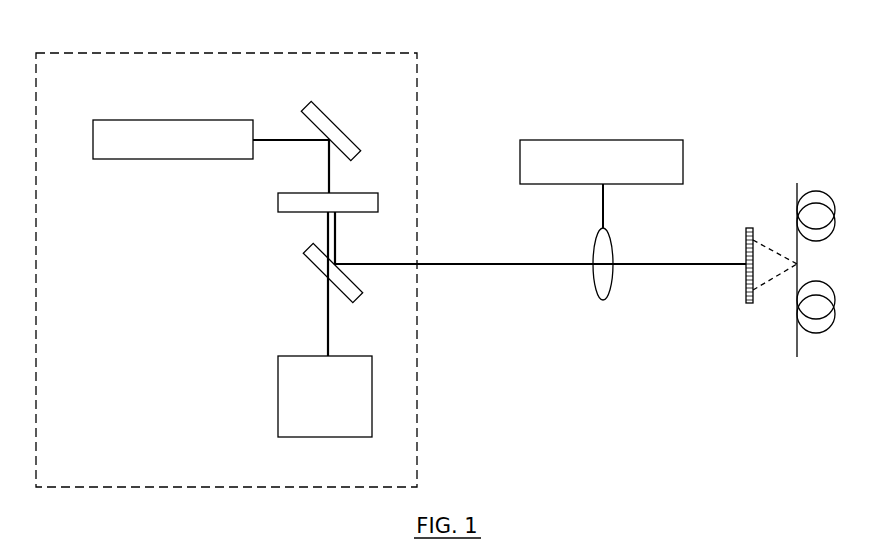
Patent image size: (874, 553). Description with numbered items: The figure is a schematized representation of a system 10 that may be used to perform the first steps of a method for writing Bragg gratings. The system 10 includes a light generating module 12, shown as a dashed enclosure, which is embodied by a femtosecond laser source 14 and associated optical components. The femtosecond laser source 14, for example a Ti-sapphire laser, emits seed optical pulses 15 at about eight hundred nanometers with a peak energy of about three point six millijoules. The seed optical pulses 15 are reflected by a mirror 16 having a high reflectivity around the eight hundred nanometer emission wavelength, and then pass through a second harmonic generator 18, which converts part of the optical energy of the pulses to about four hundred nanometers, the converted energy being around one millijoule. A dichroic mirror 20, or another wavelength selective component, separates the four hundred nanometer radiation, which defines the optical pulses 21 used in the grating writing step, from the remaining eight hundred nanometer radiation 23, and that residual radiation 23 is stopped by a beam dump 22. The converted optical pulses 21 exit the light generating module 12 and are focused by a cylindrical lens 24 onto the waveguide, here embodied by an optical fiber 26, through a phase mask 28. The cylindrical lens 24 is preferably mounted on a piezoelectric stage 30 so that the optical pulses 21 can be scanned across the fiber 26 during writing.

The system 10 is at (645, 101).
The light generating module 12 is at (418, 110).
The femtosecond laser source 14 is at (153, 160).
The seed optical pulses 15 is at (275, 130).
The mirror 16 is at (334, 118).
The second harmonic generator 18 is at (278, 212).
The dichroic mirror 20 is at (305, 255).
The optical pulses 21 is at (460, 262).
The beam dump 22 is at (278, 390).
The remaining 800 nm radiation 23 is at (330, 338).
The cylindrical lens 24 is at (603, 300).
The optical fiber 26 is at (797, 358).
The phase mask 28 is at (748, 305).
The piezoelectric stage 30 is at (520, 158).